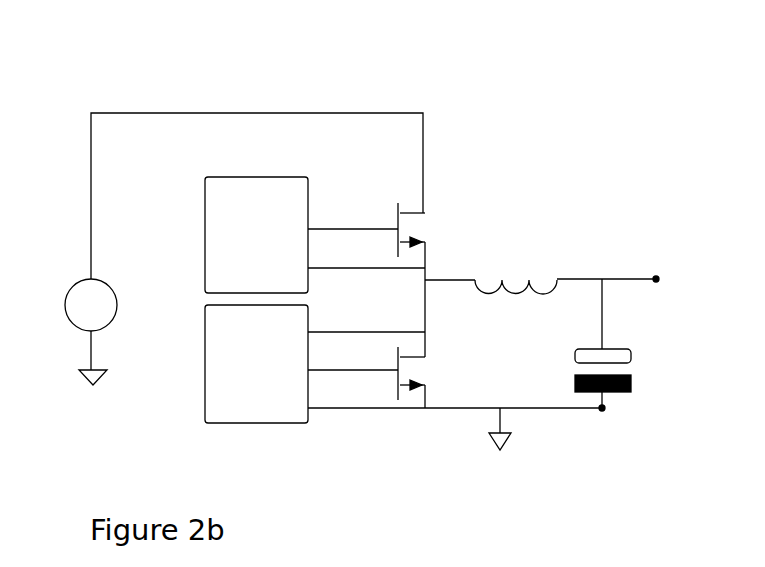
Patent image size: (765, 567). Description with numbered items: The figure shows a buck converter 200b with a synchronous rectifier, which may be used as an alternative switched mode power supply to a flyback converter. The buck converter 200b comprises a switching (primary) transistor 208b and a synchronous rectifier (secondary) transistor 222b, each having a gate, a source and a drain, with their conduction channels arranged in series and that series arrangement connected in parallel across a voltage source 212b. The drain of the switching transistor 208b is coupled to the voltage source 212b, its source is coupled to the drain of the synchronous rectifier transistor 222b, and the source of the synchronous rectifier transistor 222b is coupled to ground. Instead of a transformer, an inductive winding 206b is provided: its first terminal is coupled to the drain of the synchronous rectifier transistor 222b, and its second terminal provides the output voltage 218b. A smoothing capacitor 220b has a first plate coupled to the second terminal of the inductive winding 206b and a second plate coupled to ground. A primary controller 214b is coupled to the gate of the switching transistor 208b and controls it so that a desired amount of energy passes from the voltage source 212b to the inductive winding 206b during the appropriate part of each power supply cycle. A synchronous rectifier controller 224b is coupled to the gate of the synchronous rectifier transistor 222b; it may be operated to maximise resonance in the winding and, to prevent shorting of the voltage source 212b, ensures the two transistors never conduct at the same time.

The buck converter 200b is at (46, 86).
The voltage source 212b is at (68, 290).
The primary controller 214b is at (256, 235).
The synchronous rectifier controller 224b is at (256, 364).
The switching transistor 208b is at (396, 209).
The synchronous rectifier transistor 222b is at (400, 410).
The inductive winding 206b is at (528, 279).
The output voltage 218b is at (654, 276).
The smoothing capacitor 220b is at (618, 394).